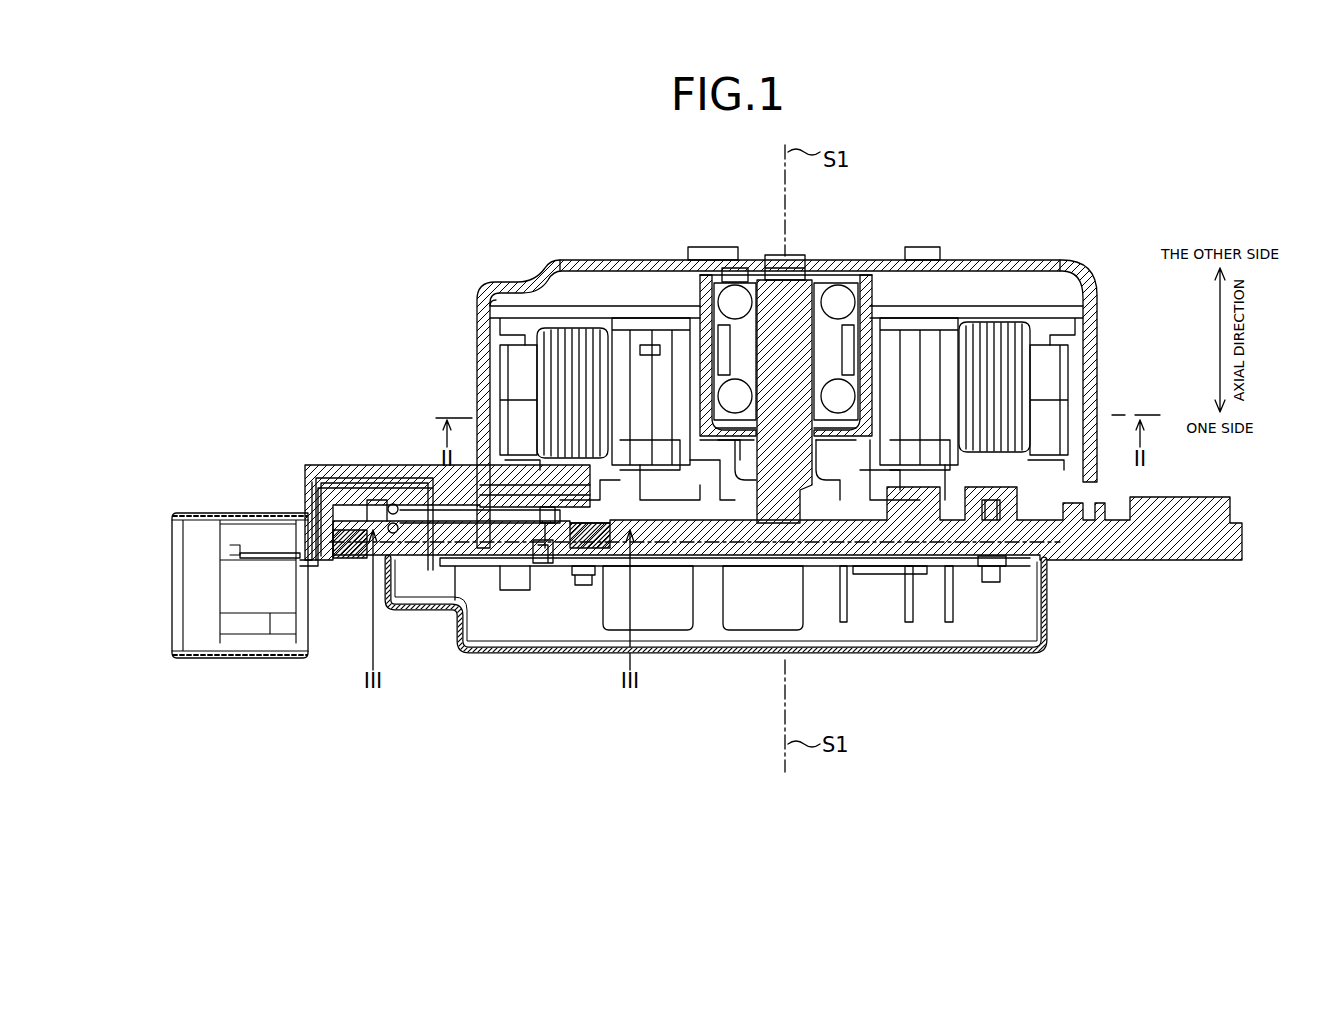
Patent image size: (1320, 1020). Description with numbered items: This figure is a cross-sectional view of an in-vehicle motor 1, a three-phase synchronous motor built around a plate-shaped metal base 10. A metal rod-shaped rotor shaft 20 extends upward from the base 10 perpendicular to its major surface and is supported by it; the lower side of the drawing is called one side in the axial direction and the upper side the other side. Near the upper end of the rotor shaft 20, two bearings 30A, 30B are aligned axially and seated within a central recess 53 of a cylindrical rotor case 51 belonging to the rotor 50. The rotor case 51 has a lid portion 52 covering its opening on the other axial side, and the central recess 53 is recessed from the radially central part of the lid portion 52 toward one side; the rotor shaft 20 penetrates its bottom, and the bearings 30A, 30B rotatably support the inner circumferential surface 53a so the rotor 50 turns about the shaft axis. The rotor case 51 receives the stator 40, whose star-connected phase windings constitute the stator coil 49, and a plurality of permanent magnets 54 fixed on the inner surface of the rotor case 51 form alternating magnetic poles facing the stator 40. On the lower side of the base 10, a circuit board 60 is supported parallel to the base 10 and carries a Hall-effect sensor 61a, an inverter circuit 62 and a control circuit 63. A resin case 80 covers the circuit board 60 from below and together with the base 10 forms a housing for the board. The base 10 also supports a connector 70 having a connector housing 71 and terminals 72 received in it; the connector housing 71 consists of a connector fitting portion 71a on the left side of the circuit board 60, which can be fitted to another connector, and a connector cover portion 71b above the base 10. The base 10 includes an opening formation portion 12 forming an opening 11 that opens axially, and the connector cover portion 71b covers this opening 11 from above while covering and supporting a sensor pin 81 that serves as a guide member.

The in-vehicle motor 1 is at (270, 708).
The base 10 is at (1159, 576).
The opening 11 is at (461, 548).
The opening formation portion 12 is at (570, 535).
The rotor shaft 20 is at (814, 354).
The bearing 30A is at (833, 290).
The bearing 30B is at (857, 388).
The stator 40 is at (664, 312).
The stator coil 49 is at (560, 372).
The rotor 50 is at (1108, 341).
The rotor case 51 is at (1097, 300).
The lid portion 52 is at (575, 260).
The central recess 53 is at (882, 408).
The inner circumferential surface 53a is at (735, 268).
The permanent magnet 54 is at (495, 380).
The circuit board 60 is at (825, 580).
The Hall-effect sensor 61a is at (543, 565).
The inverter circuit 62 is at (879, 591).
The control circuit 63 is at (591, 591).
The connector 70 is at (195, 666).
The connector housing 71 is at (318, 473).
The connector fitting portion 71a is at (228, 496).
The connector cover portion 71b is at (349, 492).
The terminal 72 is at (352, 495).
The case 80 is at (941, 666).
The sensor pin 81 is at (547, 539).